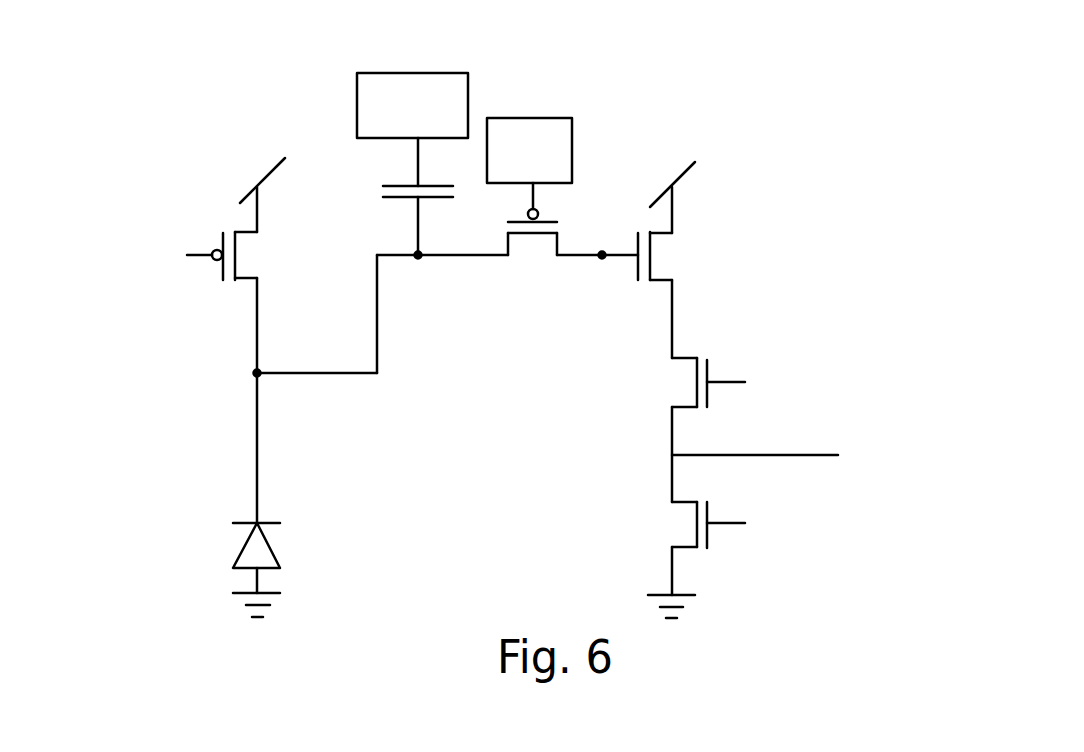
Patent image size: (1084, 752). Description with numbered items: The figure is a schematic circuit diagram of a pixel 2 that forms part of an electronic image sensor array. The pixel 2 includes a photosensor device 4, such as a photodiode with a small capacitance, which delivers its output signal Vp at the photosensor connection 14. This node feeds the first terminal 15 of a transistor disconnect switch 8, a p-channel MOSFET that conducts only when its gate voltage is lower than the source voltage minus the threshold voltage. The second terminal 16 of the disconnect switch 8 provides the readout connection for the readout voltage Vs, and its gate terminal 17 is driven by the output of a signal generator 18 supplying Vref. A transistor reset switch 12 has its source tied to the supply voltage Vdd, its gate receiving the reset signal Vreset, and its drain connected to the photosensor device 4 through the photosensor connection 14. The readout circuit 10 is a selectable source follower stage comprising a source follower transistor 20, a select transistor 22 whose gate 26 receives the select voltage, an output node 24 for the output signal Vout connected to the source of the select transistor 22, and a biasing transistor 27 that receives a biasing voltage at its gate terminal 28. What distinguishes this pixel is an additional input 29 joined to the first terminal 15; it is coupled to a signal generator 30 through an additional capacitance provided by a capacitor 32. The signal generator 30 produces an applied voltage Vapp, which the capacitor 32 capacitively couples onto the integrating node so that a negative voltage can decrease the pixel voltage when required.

The pixel 2 is at (205, 100).
The photosensor device 4 is at (263, 550).
The transistor disconnect switch 8 is at (518, 286).
The readout circuit 10 is at (808, 138).
The transistor reset switch 12 is at (222, 267).
The photosensor connection 14 is at (245, 373).
The first terminal 15 is at (417, 262).
The second terminal 16 is at (601, 262).
The gate terminal 17 is at (535, 200).
The signal generator 18 is at (545, 118).
The source follower transistor 20 is at (655, 240).
The select transistor 22 is at (690, 389).
The output node 24 is at (757, 456).
The gate of the select transistor 26 is at (725, 380).
The biasing transistor 27 is at (686, 508).
The gate terminal of the biasing transistor 28 is at (723, 525).
The additional input 29 is at (417, 233).
The signal generator 30 is at (390, 70).
The capacitor 32 is at (393, 183).